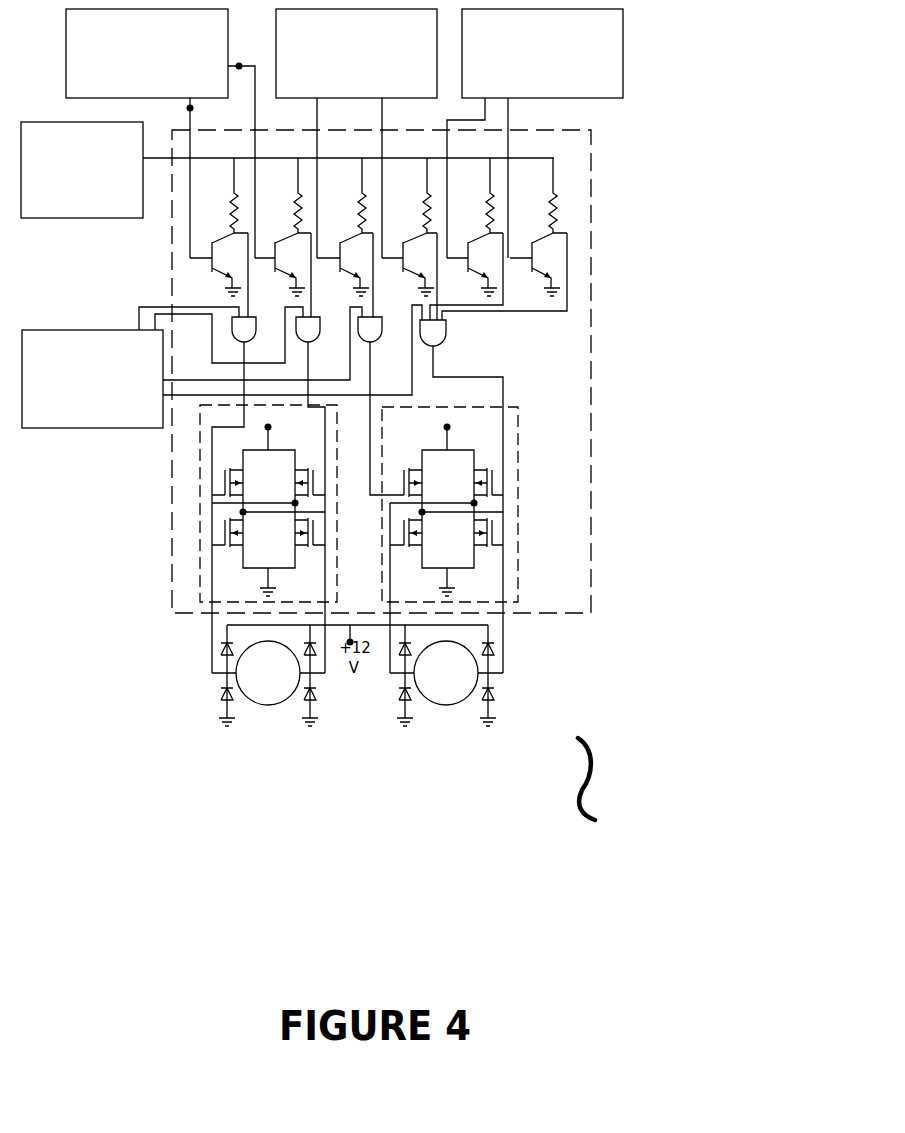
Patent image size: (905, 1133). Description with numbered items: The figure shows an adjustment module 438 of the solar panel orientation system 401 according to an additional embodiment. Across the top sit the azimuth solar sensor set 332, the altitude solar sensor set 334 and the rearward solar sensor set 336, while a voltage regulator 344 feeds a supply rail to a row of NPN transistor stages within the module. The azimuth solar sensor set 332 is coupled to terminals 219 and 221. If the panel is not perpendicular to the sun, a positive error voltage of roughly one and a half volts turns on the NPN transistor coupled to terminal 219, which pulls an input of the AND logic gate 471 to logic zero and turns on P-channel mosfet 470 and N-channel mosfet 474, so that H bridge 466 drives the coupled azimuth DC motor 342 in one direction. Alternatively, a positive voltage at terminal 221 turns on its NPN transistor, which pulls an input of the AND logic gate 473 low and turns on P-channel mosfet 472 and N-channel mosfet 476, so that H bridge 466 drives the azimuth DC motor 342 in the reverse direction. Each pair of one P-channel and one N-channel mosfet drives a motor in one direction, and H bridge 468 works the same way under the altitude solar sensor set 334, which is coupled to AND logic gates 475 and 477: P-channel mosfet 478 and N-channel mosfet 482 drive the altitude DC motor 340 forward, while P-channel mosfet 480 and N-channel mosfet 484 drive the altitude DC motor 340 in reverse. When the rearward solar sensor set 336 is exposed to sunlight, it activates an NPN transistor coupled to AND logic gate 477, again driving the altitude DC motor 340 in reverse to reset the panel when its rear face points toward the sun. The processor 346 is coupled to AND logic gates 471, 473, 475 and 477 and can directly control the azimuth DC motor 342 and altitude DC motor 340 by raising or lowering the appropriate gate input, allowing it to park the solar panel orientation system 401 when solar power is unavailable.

The azimuth solar sensor set 332 is at (162, 84).
The altitude solar sensor set 334 is at (390, 84).
The rearward solar sensor set 336 is at (577, 84).
The terminal 219 is at (188, 108).
The terminal 221 is at (241, 65).
The voltage regulator 344 is at (107, 200).
The processor 346 is at (77, 399).
The adjustment module 438 is at (591, 182).
The AND logic gate 471 is at (253, 339).
The AND logic gate 473 is at (317, 339).
The AND logic gate 475 is at (379, 339).
The AND logic gate 477 is at (444, 342).
The H bridge 466 is at (212, 499).
The H bridge 468 is at (523, 534).
The P-channel mosfet 470 is at (226, 467).
The P-channel mosfet 472 is at (313, 467).
The N-channel mosfet 474 is at (225, 549).
The N-channel mosfet 476 is at (313, 549).
The P-channel mosfet 478 is at (405, 467).
The P-channel mosfet 480 is at (492, 467).
The N-channel mosfet 482 is at (404, 549).
The N-channel mosfet 484 is at (492, 549).
The azimuth DC motor 342 is at (297, 697).
The altitude DC motor 340 is at (472, 697).
The solar panel orientation system 401 is at (610, 818).